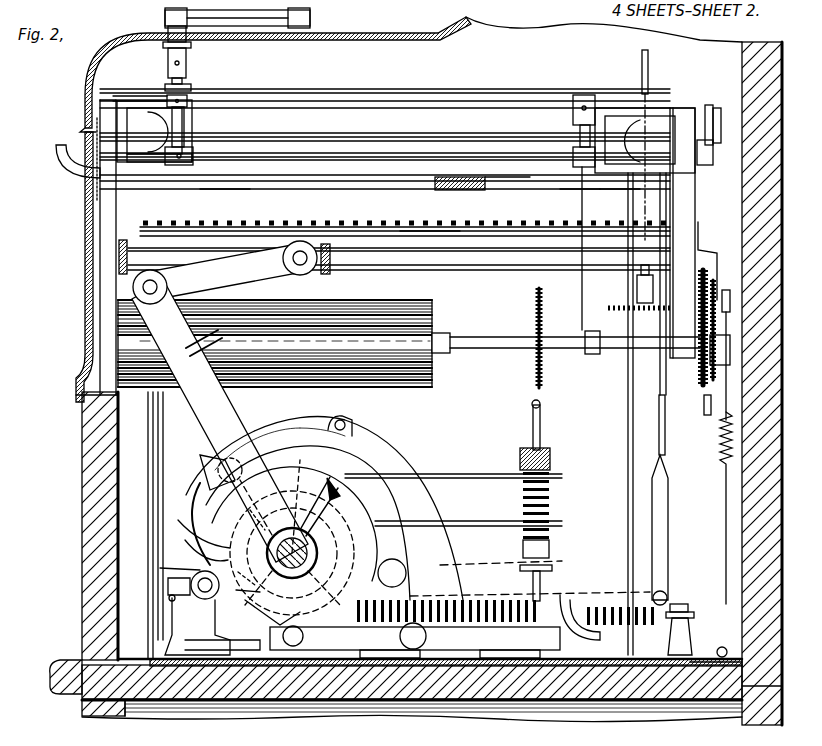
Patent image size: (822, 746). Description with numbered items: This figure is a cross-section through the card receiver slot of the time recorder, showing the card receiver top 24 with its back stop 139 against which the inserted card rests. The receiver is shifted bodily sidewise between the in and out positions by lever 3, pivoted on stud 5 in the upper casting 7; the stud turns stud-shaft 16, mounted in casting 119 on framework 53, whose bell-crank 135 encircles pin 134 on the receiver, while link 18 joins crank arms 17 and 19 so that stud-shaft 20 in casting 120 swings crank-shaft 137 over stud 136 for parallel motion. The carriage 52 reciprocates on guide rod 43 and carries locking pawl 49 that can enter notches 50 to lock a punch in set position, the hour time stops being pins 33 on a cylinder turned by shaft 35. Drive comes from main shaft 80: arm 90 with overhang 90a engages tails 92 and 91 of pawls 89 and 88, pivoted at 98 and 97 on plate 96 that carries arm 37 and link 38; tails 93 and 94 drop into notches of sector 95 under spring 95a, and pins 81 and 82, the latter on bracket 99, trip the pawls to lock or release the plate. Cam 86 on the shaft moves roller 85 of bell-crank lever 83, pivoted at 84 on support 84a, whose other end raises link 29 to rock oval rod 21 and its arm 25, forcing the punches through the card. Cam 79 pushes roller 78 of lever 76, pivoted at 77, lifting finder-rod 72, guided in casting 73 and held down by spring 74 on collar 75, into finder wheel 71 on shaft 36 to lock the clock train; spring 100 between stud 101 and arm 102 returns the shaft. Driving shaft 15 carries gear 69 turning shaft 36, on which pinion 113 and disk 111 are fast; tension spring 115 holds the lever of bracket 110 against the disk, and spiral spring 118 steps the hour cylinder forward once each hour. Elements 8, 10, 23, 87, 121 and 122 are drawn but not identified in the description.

The lever 3 is at (310, 18).
The stud 5 is at (188, 58).
The upper casting 7 is at (85, 75).
The side plate 8 is at (85, 270).
The guide hook 10 is at (62, 170).
The driving shaft 15 is at (650, 62).
The stud-shaft 16 is at (172, 85).
The crank arm 17 is at (165, 96).
The link 18 is at (340, 89).
The crank arm 19 is at (585, 95).
The stud-shaft 20 is at (540, 153).
The oval rod 21 is at (320, 137).
The rack 23 is at (322, 226).
The card receiver top 24 is at (455, 190).
The arm 25 is at (706, 158).
The link 29 is at (668, 520).
The pins 33 is at (226, 322).
The shaft 35 is at (445, 358).
The shaft 36 is at (490, 330).
The arm 37 is at (236, 420).
The link 38 is at (296, 276).
The guide rod 43 is at (438, 268).
The locking pawl 49 is at (190, 232).
The notches 50 is at (416, 230).
The carriage 52 is at (119, 250).
The framework 53 is at (100, 210).
The gear 69 is at (610, 305).
The finder wheel 71 is at (536, 372).
The finder-rod 72 is at (532, 430).
The casting 73 is at (520, 458).
The spiral compression spring 74 is at (550, 500).
The collar 75 is at (560, 560).
The lever 76 is at (520, 658).
The pivot 77 is at (416, 652).
The roller 78 is at (297, 650).
The cam 79 is at (275, 630).
The main shaft 80 is at (296, 532).
The pin 81 is at (170, 598).
The pin 82 is at (354, 425).
The bell-crank lever 83 is at (478, 590).
The pivot 84 is at (392, 560).
The support 84a is at (380, 658).
The roller 85 is at (318, 468).
The cam 86 is at (326, 482).
The bar 87 is at (158, 410).
The pawl 88 is at (170, 582).
The pawl 89 is at (205, 468).
The arm 90 is at (180, 525).
The overhang portion 90a is at (160, 568).
The tail 91 is at (200, 540).
The tail 92 is at (200, 495).
The tail 93 is at (222, 641).
The tail 94 is at (275, 438).
The sector 95 is at (322, 430).
The spring 95a is at (272, 610).
The plate 96 is at (245, 570).
The pivot 97 is at (248, 581).
The pivot 98 is at (255, 512).
The bracket 99 is at (398, 462).
The spring 100 is at (607, 624).
The stud 101 is at (686, 628).
The arm 102 is at (230, 708).
The bracket 110 is at (700, 262).
The disk 111 is at (706, 368).
The pinion 113 is at (658, 402).
The tension spring 115 is at (720, 448).
The spiral spring 118 is at (732, 290).
The casting 119 is at (100, 130).
The casting 120 is at (618, 110).
The base 121 is at (706, 667).
The base 122 is at (722, 667).
The pin 134 is at (200, 162).
The bell-crank 135 is at (225, 192).
The stud 136 is at (625, 195).
The crank-shaft 137 is at (592, 190).
The back stop 139 is at (520, 190).